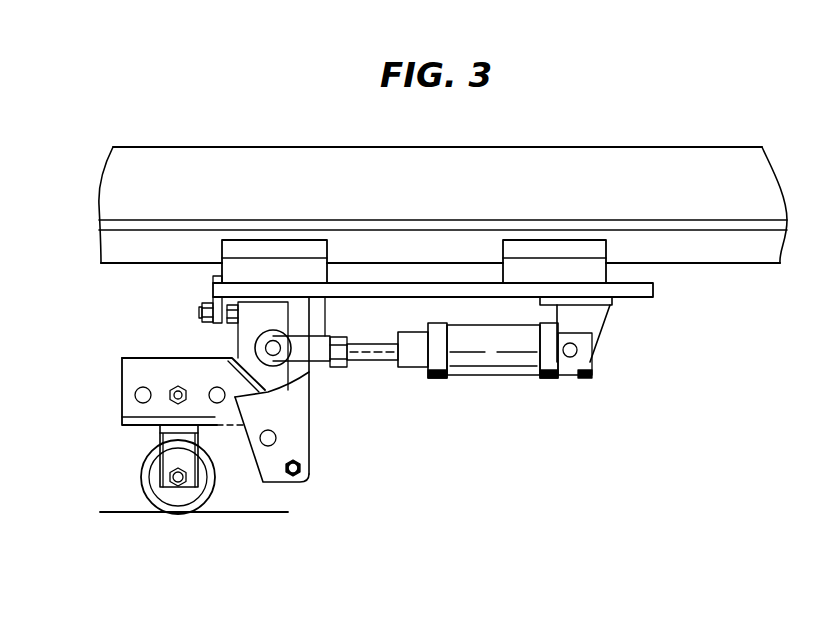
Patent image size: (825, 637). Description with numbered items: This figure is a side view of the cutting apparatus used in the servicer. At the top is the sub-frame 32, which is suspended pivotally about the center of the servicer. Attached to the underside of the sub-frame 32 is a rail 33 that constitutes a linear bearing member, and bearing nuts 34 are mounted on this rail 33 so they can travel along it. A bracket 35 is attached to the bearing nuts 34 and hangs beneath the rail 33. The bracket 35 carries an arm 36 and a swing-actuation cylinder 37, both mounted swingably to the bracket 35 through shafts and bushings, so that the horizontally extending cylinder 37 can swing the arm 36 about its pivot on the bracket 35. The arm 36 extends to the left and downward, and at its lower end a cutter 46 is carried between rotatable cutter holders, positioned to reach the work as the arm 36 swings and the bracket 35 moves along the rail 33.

The sub-frame 32 is at (490, 146).
The rail 33 is at (722, 264).
The bearing nuts 34 is at (275, 240).
The bracket 35 is at (633, 298).
The arm 36 is at (150, 358).
The swing-actuation cylinder 37 is at (475, 377).
The cutter 46 is at (215, 481).